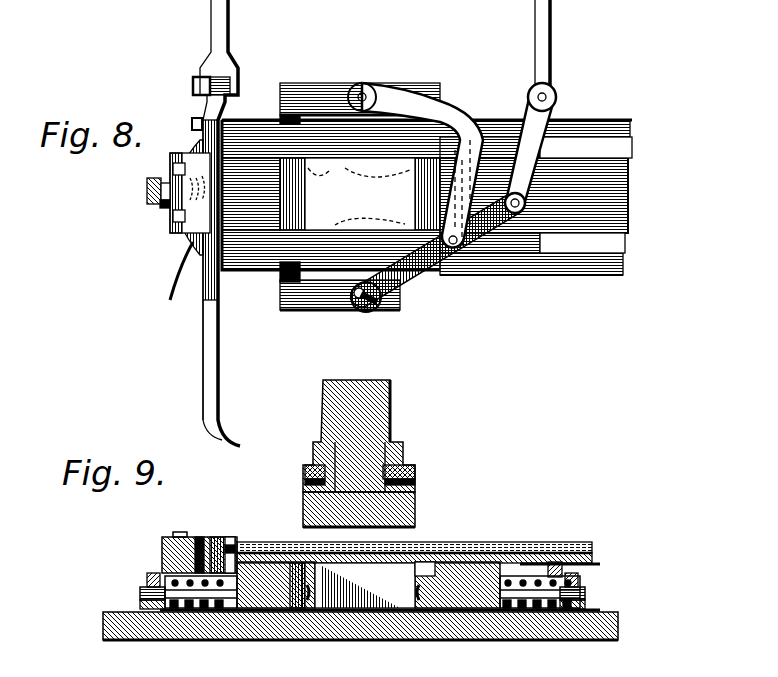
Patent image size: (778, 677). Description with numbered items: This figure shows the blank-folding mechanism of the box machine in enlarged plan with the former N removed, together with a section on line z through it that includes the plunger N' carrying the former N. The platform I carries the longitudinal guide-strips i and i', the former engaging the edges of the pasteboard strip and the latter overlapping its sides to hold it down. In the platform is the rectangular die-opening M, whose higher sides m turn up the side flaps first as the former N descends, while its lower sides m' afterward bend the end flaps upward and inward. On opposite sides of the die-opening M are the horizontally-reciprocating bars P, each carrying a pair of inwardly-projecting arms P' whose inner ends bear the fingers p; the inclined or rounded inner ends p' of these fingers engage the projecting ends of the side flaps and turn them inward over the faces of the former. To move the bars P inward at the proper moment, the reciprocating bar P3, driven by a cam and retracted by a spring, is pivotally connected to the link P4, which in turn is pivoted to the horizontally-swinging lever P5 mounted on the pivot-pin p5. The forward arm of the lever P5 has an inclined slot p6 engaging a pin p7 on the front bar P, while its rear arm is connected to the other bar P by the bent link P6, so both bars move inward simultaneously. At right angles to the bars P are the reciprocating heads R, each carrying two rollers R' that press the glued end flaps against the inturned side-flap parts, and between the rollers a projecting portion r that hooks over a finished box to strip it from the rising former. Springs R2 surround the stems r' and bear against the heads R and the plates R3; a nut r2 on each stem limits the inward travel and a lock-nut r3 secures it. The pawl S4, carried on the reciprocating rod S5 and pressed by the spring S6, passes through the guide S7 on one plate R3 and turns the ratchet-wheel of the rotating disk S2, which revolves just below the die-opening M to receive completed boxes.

In FIG. 8, the reciprocating rod S5 is at (221, 223).
In FIG. 8, the pawl S4 is at (190, 360).
In FIG. 9, the pawl S4 is at (228, 548).
In FIG. 8, the spring S6 is at (178, 268).
In FIG. 9, the spring S6 is at (221, 545).
In FIG. 8, the guide S7 is at (175, 244).
In FIG. 9, the guide S7 is at (200, 545).
In FIG. 8, the horizontally-reciprocating bar P is at (360, 194).
In FIG. 8, the inwardly-projecting arm P' is at (356, 198).
In FIG. 8, the reciprocating bar P3 is at (552, 43).
In FIG. 8, the link P4 is at (527, 125).
In FIG. 8, the horizontally-swinging lever P5 is at (490, 220).
In FIG. 8, the link P6 is at (452, 108).
In FIG. 8, the finger p is at (319, 168).
In FIG. 9, the finger p is at (415, 565).
In FIG. 8, the inclined or rounded inner end p' is at (372, 195).
In FIG. 8, the pivot-pin p5 is at (440, 272).
In FIG. 8, the inclined slot p6 is at (366, 312).
In FIG. 8, the pin p7 is at (352, 300).
In FIG. 8, the longitudinal guide-strip i is at (535, 196).
In FIG. 9, the longitudinal guide-strip i is at (414, 543).
In FIG. 8, the longitudinal guide-strip i' is at (596, 196).
In FIG. 9, the longitudinal guide-strip i' is at (528, 534).
In FIG. 8, the platform I is at (534, 195).
In FIG. 9, the platform I is at (564, 565).
In FIG. 8, the section line z is at (145, 193).
In FIG. 8, the nut r2 is at (166, 205).
In FIG. 9, the nut r2 is at (150, 580).
In FIG. 8, the lock-nut r3 is at (150, 186).
In FIG. 9, the lock-nut r3 is at (140, 605).
In FIG. 9, the stem r' is at (359, 593).
In FIG. 9, the projecting portion r is at (363, 592).
In FIG. 9, the reciprocating head R is at (380, 612).
In FIG. 8, the roller R' is at (427, 195).
In FIG. 9, the roller R' is at (357, 613).
In FIG. 9, the spring R2 is at (205, 612).
In FIG. 8, the plate R3 is at (178, 225).
In FIG. 9, the plate R3 is at (562, 568).
In FIG. 9, the higher side of die-opening m is at (351, 565).
In FIG. 8, the lower side of die-opening m' is at (360, 194).
In FIG. 9, the lower side of die-opening m' is at (414, 537).
In FIG. 8, the die-opening M is at (360, 194).
In FIG. 9, the die-opening M is at (357, 588).
In FIG. 9, the former N is at (349, 496).
In FIG. 9, the plunger N' is at (367, 436).
In FIG. 9, the horizontal rotating disk S2 is at (360, 637).